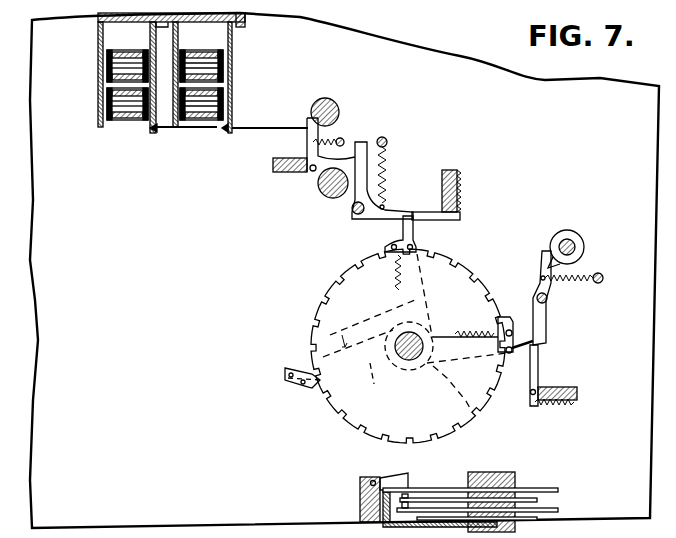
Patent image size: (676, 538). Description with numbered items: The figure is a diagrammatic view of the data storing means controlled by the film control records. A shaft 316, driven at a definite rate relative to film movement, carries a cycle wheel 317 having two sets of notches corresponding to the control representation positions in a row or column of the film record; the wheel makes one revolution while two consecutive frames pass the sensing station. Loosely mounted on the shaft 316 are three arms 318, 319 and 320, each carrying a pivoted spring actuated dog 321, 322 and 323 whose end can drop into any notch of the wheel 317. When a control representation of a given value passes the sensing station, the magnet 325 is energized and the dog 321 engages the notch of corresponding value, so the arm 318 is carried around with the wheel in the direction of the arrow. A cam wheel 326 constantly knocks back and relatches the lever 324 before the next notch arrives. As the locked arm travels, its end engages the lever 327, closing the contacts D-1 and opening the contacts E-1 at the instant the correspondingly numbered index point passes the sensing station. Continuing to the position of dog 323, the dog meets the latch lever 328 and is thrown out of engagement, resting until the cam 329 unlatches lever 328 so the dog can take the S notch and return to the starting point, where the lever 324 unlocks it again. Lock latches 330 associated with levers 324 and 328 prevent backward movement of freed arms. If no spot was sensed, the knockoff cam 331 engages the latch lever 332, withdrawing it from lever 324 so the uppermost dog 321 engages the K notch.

The shaft 316 is at (416, 356).
The cycle wheel 317 is at (331, 307).
The arm 318 is at (316, 323).
The arm 319 is at (375, 372).
The arm 320 is at (539, 373).
The spring actuated dog 321 is at (397, 229).
The spring actuated dog 322 is at (312, 384).
The spring actuated dog 323 is at (514, 326).
The lever 324 is at (365, 167).
The magnet 325 is at (226, 68).
The cam wheel 326 is at (329, 196).
The lever 327 is at (392, 479).
The latch lever 328 is at (543, 309).
The cam 329 is at (560, 233).
The lock latch 330 is at (437, 220).
The knockoff cam 331 is at (334, 90).
The latch lever 332 is at (306, 143).
The contacts D-1 is at (416, 497).
The contacts E-1 is at (383, 506).